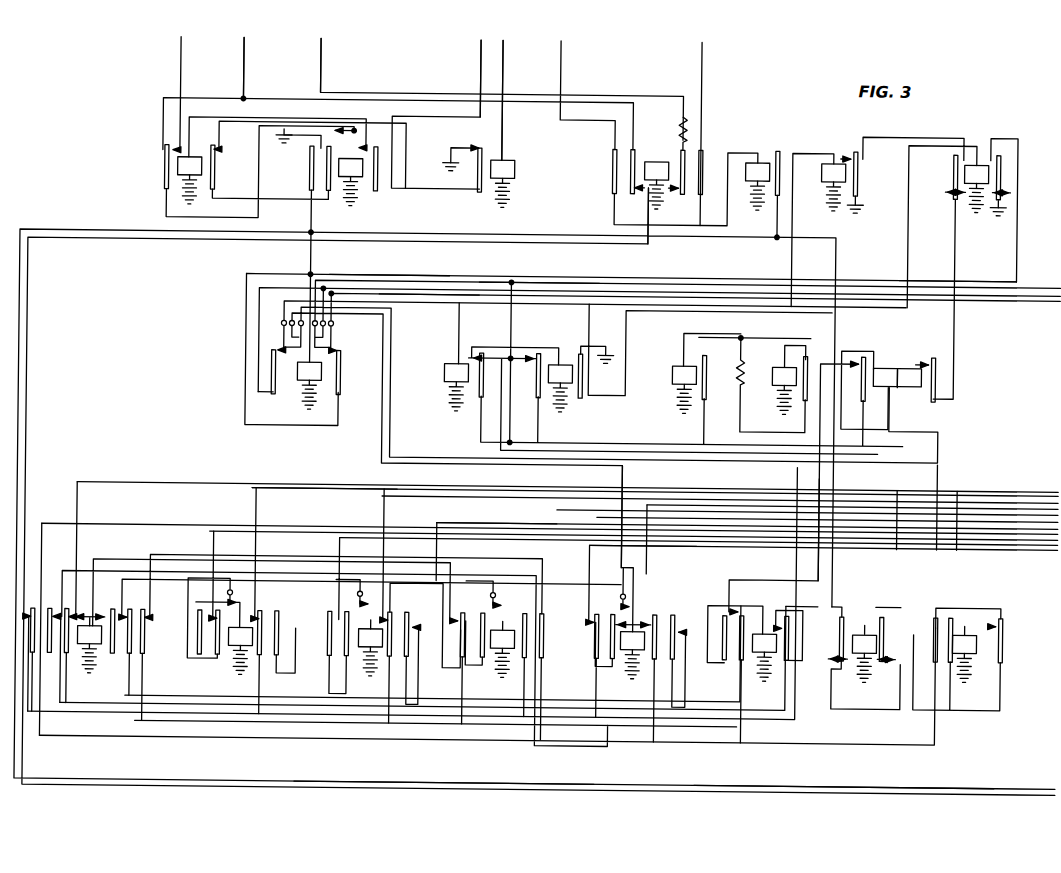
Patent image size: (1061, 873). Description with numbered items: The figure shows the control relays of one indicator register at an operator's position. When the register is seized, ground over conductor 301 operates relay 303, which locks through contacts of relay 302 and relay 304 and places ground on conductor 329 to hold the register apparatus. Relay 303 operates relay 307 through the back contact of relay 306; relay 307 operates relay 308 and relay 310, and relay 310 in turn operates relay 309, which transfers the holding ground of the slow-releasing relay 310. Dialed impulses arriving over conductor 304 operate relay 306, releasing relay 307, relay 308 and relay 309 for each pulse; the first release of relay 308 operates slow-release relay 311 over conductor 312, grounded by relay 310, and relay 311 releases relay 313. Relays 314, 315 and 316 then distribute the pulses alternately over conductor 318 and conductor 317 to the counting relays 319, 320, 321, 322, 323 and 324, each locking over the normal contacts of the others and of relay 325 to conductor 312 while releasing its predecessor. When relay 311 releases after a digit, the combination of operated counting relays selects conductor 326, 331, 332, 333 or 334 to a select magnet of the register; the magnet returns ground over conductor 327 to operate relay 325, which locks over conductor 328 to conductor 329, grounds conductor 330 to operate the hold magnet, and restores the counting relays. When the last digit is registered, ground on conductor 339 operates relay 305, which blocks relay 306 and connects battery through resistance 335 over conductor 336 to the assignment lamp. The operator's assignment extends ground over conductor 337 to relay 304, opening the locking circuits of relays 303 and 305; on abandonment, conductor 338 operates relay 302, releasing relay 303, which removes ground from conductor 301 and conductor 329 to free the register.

The conductor 301 is at (242, 55).
The conductor 336 is at (319, 55).
The conductor 338 is at (479, 58).
The conductor 337 is at (501, 58).
The relay 304 is at (573, 58).
The resistance 335 is at (684, 120).
The relay 302 is at (177, 165).
The relay 303 is at (338, 167).
The relay 305 is at (657, 155).
The relay 306 is at (760, 155).
The relay 307 is at (837, 155).
The relay 310 is at (978, 155).
The conductor 327 is at (953, 272).
The conductor 330 is at (388, 272).
The conductor 312 is at (538, 278).
The conductor 328 is at (444, 296).
The relay 325 is at (323, 369).
The relay 308 is at (446, 369).
The relay 309 is at (565, 362).
The relay 314 is at (674, 369).
The relay 315 is at (780, 362).
The relay 316 is at (912, 362).
The conductor 326 is at (888, 513).
The conductor 318 is at (942, 466).
The conductor 317 is at (817, 555).
The conductor 331 is at (972, 527).
The conductor 333 is at (300, 526).
The conductor 332 is at (480, 523).
The conductor 334 is at (596, 530).
The relay 319 is at (99, 640).
The relay 320 is at (248, 625).
The relay 321 is at (377, 626).
The relay 322 is at (519, 634).
The relay 323 is at (625, 644).
The relay 324 is at (760, 645).
The relay 311 is at (868, 626).
The relay 313 is at (981, 634).
The conductor 329 is at (437, 779).
The conductor 339 is at (840, 785).